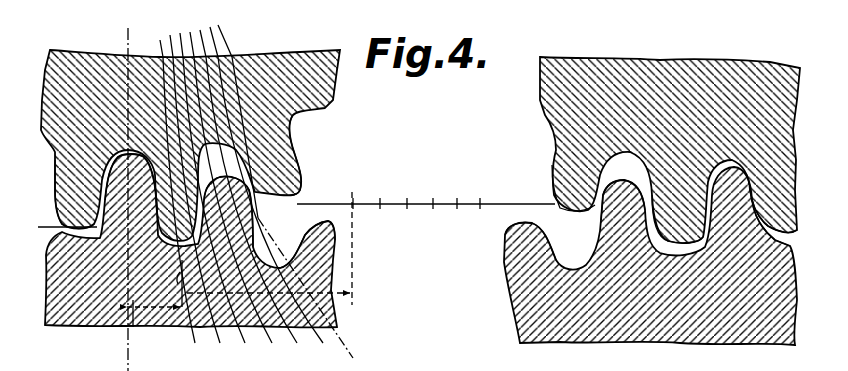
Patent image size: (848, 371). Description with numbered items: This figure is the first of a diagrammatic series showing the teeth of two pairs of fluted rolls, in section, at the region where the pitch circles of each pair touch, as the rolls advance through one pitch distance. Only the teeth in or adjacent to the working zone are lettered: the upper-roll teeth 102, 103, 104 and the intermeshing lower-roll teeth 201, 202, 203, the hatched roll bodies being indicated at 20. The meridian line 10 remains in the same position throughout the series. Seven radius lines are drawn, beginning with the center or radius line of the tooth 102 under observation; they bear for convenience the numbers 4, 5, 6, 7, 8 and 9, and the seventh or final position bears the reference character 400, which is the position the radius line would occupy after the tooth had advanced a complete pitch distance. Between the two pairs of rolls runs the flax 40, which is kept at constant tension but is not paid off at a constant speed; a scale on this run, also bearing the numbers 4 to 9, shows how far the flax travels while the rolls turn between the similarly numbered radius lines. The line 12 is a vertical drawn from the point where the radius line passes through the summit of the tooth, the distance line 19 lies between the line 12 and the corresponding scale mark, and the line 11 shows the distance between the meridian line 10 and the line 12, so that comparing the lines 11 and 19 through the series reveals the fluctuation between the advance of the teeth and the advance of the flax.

The blank body 20 is at (77, 90).
The meridian line 10 is at (128, 366).
The line 11 is at (133, 328).
The line 12 is at (181, 260).
The distance line 19 is at (352, 294).
The run of flax 40 is at (426, 245).
The radius line 400 is at (298, 198).
The radius line 4 is at (259, 205).
The radius line 5 is at (279, 203).
The radius line 6 is at (297, 202).
The radius line 7 is at (315, 201).
The radius line 8 is at (331, 200).
The radius line 9 is at (347, 199).
The tooth of upper roll 102 is at (113, 241).
The tooth of upper roll 103 is at (294, 149).
The tooth of upper roll 104 is at (785, 212).
The tooth of lower roll 201 is at (107, 203).
The tooth of lower roll 202 is at (256, 206).
The tooth of lower roll 203 is at (335, 238).